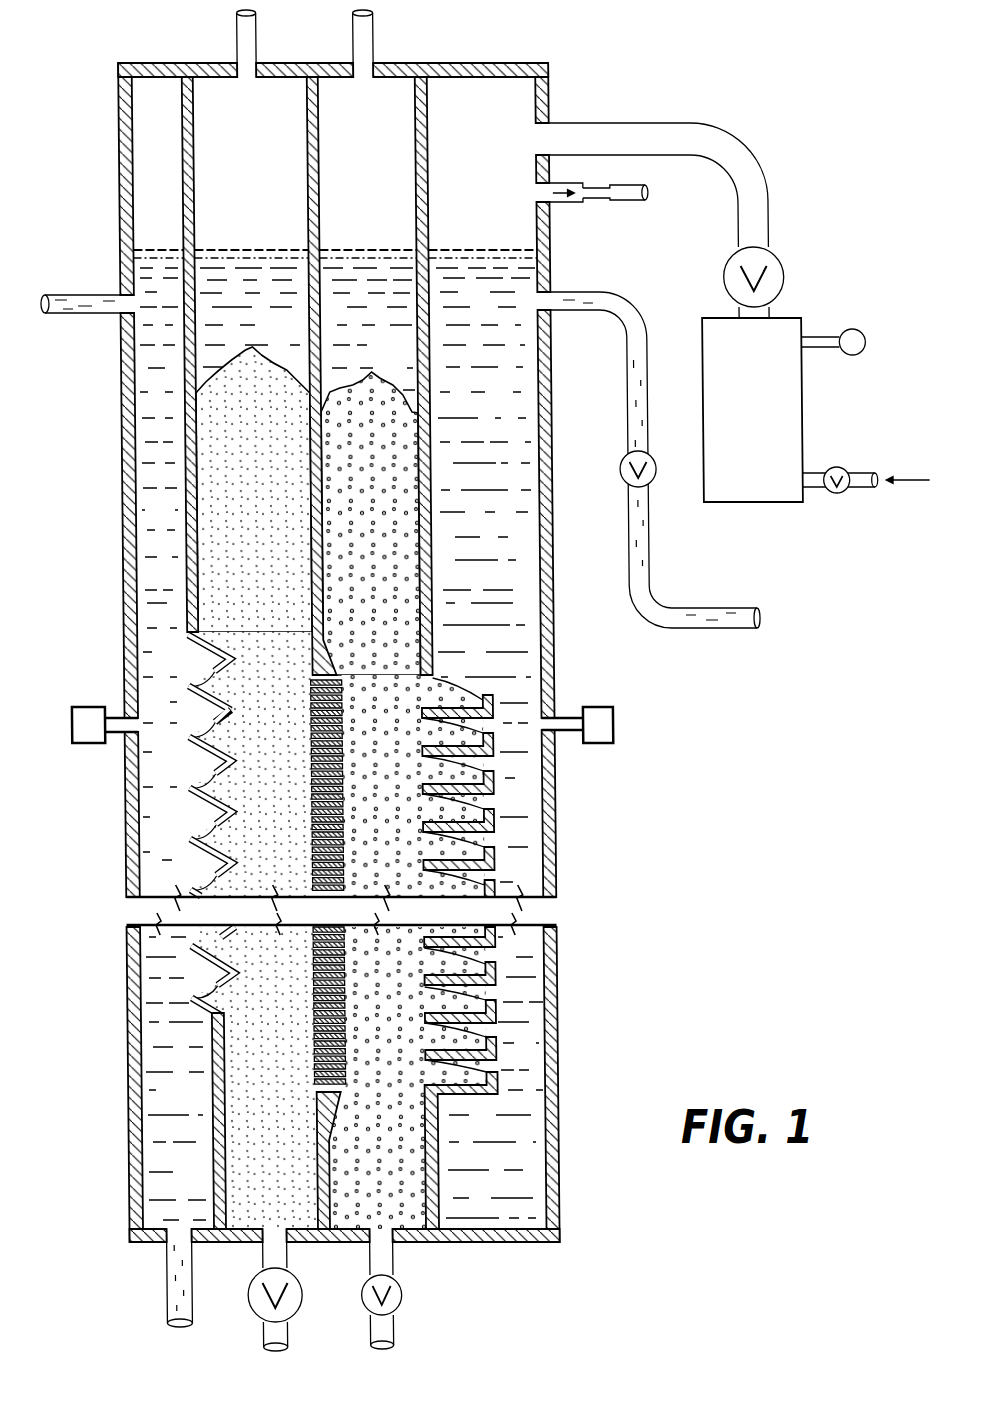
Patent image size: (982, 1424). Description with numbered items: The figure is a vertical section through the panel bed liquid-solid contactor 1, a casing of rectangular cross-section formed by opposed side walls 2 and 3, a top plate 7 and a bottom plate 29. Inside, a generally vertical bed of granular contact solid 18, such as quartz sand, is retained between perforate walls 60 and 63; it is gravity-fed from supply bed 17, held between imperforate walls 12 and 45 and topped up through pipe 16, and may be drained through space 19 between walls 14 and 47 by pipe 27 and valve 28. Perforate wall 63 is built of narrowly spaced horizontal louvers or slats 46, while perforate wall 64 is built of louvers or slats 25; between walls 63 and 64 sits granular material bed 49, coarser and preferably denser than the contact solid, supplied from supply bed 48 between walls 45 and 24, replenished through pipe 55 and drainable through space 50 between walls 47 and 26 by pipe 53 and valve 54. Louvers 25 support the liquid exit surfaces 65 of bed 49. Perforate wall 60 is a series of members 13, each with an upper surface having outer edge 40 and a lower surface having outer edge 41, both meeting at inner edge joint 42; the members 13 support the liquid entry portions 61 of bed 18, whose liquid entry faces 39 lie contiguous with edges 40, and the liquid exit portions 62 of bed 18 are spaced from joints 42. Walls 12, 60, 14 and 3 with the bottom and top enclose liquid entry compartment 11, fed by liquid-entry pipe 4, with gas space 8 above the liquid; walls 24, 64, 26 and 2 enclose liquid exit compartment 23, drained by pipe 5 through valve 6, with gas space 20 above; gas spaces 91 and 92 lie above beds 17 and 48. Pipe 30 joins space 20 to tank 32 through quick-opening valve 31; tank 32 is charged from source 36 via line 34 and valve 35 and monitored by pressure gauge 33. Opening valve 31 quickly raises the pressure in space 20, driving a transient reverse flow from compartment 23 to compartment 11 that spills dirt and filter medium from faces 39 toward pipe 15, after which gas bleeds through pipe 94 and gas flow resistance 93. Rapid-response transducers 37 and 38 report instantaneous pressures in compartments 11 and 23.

The panel bed liquid-solid contactor 1 is at (117, 571).
The side wall 2 is at (556, 701).
The side wall 3 is at (125, 443).
The liquid-entry pipe 4 is at (66, 295).
The pipe 5 is at (625, 336).
The valve 6 is at (620, 479).
The top plate 7 is at (168, 62).
The gas space 8 is at (142, 132).
The liquid entry compartment 11 is at (145, 350).
The imperforate wall 12 is at (193, 214).
The member 13 is at (190, 648).
The wall 14 is at (213, 1165).
The pipe 15 is at (160, 1291).
The pipe 16 is at (236, 38).
The supply bed 17 is at (270, 370).
The bed of granular contact solid 18 is at (288, 811).
The space 19 is at (265, 1078).
The gas space 20 is at (500, 98).
The liquid exit compartment 23 is at (505, 443).
The imperforate wall 24 is at (427, 213).
The louvers or slats 25 is at (500, 866).
The wall 26 is at (440, 1196).
The pipe 27 is at (285, 1268).
The valve 28 is at (293, 1318).
The bottom plate 29 is at (205, 1245).
The pipe 30 is at (655, 123).
The quick-opening valve 31 is at (776, 263).
The tank 32 is at (799, 411).
The pressure gauge 33 is at (850, 329).
The line 34 is at (818, 492).
The valve 35 is at (845, 467).
The source of gas under pressure 36 is at (928, 483).
The rapid-response transducer 37 is at (78, 707).
The rapid-response transducer 38 is at (614, 726).
The liquid entry face 39 is at (200, 784).
The outer edge 40 is at (186, 690).
The outer edge 41 is at (207, 737).
The inner edge joint 42 is at (230, 713).
The imperforate wall 45 is at (318, 213).
The louvers or slats 46 is at (346, 740).
The wall 47 is at (318, 1200).
The supply bed 48 is at (383, 375).
The granular material bed 49 is at (388, 807).
The space 50 is at (390, 1167).
The pipe 53 is at (392, 1268).
The valve 54 is at (392, 1300).
The pipe 55 is at (373, 34).
The perforate wall 60 is at (202, 872).
The liquid entry portion 61 is at (215, 808).
The liquid exit portion 62 is at (305, 860).
The perforate wall 63 is at (348, 851).
The perforate wall 64 is at (496, 774).
The liquid exit surface 65 is at (500, 952).
The gas space 91 is at (275, 95).
The gas space 92 is at (383, 95).
The gas flow resistance 93 is at (592, 184).
The pipe 94 is at (577, 204).